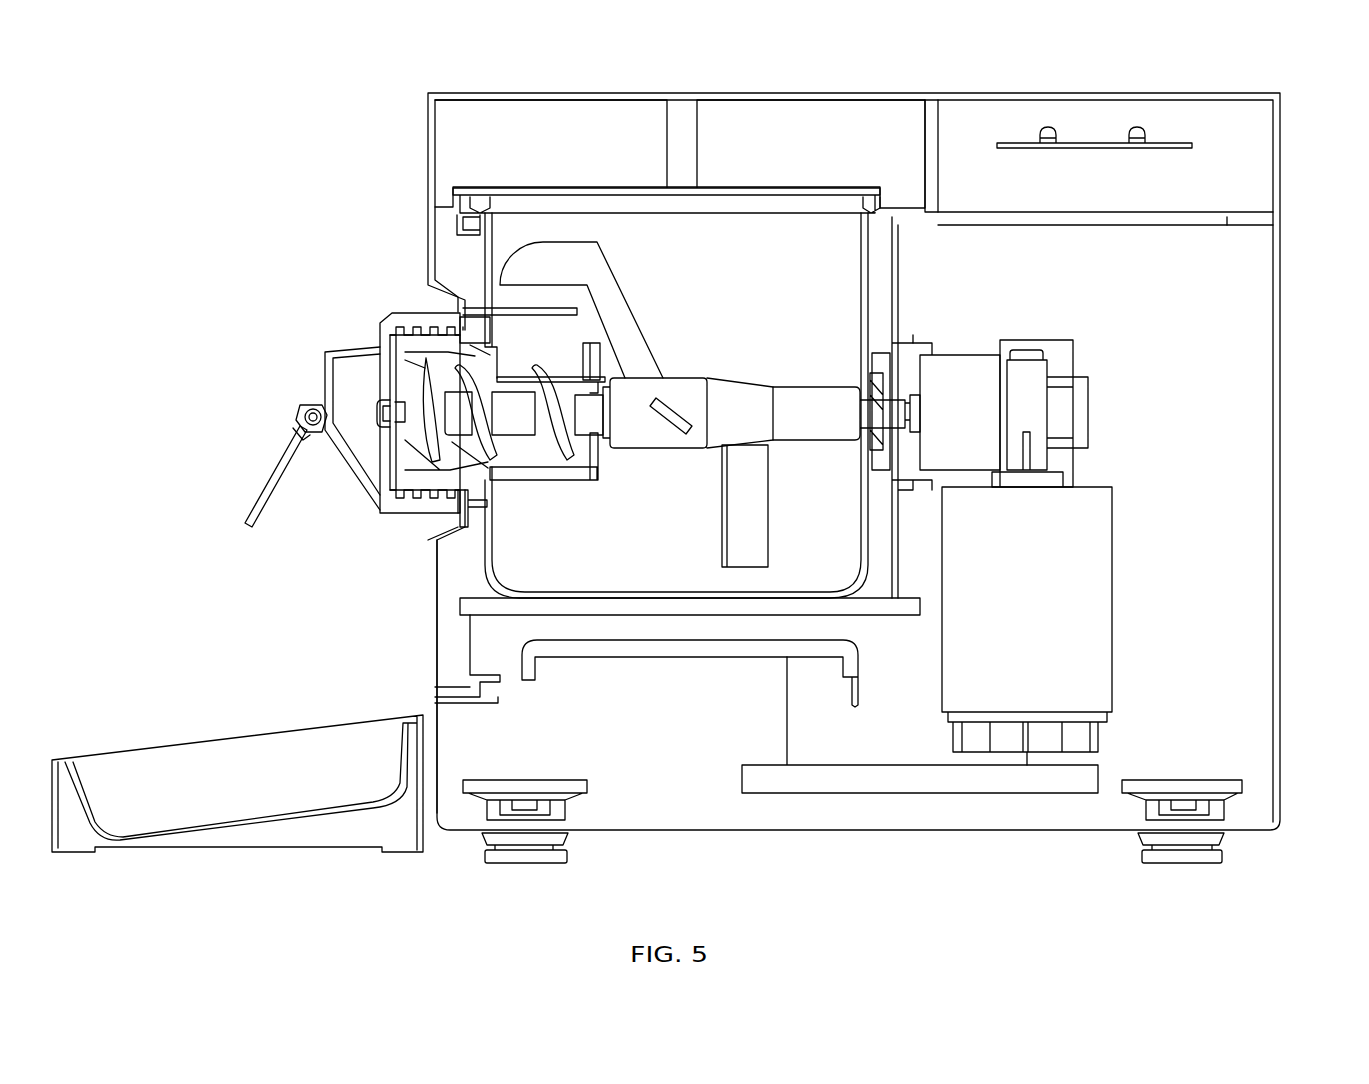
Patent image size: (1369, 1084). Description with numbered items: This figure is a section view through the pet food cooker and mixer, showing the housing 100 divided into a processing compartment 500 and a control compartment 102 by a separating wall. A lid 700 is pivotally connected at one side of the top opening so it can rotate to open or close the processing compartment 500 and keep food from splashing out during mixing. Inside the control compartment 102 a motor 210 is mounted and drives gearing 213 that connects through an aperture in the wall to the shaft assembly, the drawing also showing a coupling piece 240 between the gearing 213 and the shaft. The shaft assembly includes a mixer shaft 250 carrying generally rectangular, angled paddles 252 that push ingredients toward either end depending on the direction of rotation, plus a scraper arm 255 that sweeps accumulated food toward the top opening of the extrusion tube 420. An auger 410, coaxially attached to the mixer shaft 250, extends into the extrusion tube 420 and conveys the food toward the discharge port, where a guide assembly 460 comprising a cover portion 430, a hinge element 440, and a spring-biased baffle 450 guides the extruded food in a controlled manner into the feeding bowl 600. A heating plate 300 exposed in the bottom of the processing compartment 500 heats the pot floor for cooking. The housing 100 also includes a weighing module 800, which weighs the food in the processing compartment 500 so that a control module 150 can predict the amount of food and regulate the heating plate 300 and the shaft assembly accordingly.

The housing 100 is at (1257, 400).
The control compartment 102 is at (1238, 302).
The control module 150 is at (900, 793).
The motor 210 is at (1080, 660).
The gearing 213 is at (962, 367).
The coupling 240 is at (690, 447).
The mixer shaft 250 is at (752, 400).
The paddles 252 is at (675, 400).
The scraper arm 255 is at (500, 280).
The heating plate 300 is at (697, 648).
The auger 410 is at (510, 405).
The extrusion tube 420 is at (518, 473).
The cover portion 430 is at (323, 380).
The lever clamp 440 is at (306, 411).
The spring-biased baffle 450 is at (268, 459).
The guide assembly 460 is at (304, 420).
The processing compartment 500 is at (705, 268).
The feeding bowl 600 is at (173, 757).
The lid 700 is at (473, 100).
The weighing module 800 is at (520, 835).